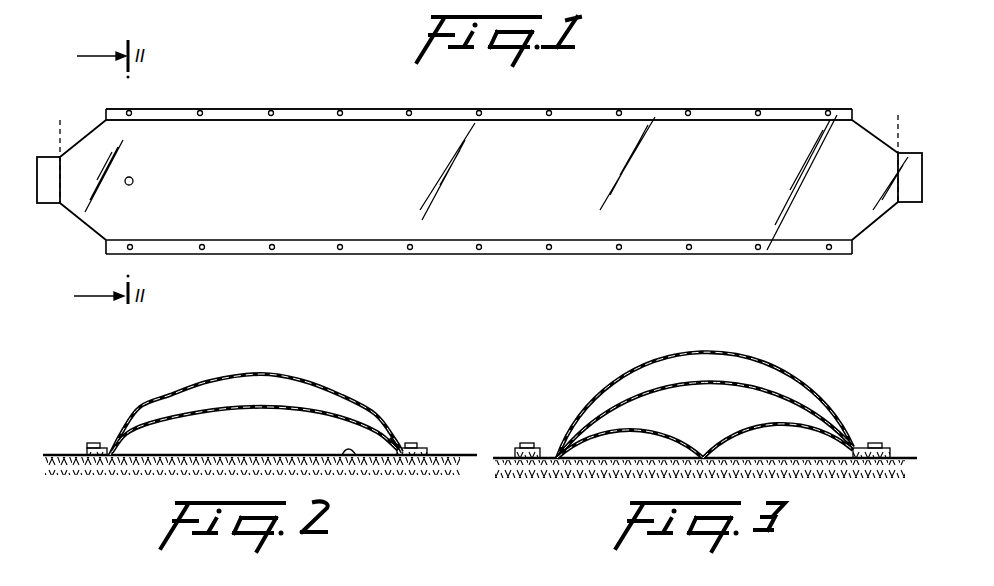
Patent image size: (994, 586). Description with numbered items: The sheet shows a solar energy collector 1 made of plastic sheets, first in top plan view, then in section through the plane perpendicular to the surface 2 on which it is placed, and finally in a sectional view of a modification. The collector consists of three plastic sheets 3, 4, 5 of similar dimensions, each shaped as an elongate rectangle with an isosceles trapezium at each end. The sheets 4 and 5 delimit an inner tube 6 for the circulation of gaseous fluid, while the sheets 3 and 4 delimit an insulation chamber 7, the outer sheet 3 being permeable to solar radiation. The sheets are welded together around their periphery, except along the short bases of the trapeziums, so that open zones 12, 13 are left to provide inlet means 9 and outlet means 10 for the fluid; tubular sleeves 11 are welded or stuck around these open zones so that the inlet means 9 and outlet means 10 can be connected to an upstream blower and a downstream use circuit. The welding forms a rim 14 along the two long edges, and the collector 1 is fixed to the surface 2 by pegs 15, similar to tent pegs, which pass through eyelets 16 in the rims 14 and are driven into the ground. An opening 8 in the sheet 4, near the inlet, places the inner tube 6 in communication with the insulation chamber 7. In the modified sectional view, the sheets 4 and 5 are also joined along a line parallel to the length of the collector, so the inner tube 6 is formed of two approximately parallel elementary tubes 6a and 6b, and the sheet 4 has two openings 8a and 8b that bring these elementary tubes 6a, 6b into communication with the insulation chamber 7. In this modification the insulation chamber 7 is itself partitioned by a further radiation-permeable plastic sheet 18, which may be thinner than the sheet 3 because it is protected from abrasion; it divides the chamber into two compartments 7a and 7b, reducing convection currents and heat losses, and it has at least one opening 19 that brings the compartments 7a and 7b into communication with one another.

In FIG. 1, the solar energy collector 1 is at (370, 104).
In FIG. 2, the solar energy collector 1 is at (400, 407).
In FIG. 3, the solar energy collector 1 is at (852, 413).
In FIG. 2, the surface 2 is at (63, 455).
In FIG. 3, the surface 2 is at (503, 458).
In FIG. 2, the plastic sheet 3 is at (296, 377).
In FIG. 3, the plastic sheet 3 is at (781, 404).
In FIG. 2, the plastic sheet 4 is at (329, 411).
In FIG. 3, the plastic sheet 4 is at (738, 425).
In FIG. 2, the plastic sheet 5 is at (352, 455).
In FIG. 3, the plastic sheet 5 is at (815, 459).
In FIG. 2, the inner tube 6 is at (200, 433).
In FIG. 3, the inner tube 6 is at (548, 558).
In FIG. 3, the elementary tube 6a is at (657, 443).
In FIG. 3, the elementary tube 6b is at (781, 437).
In FIG. 2, the insulation chamber 7 is at (170, 404).
In FIG. 3, the insulation chamber 7 is at (591, 311).
In FIG. 3, the compartment 7a is at (640, 379).
In FIG. 3, the compartment 7b is at (637, 411).
In FIG. 1, the opening 8 is at (134, 178).
In FIG. 2, the opening 8 is at (259, 401).
In FIG. 3, the opening 8a is at (625, 434).
In FIG. 3, the opening 8b is at (791, 430).
In FIG. 1, the inlet means 9 is at (37, 170).
In FIG. 1, the outlet means 10 is at (923, 180).
In FIG. 1, the tubular sleeve 11 is at (48, 192).
In FIG. 1, the open zone 12 is at (60, 149).
In FIG. 1, the open zone 13 is at (897, 148).
In FIG. 1, the rim 14 is at (515, 110).
In FIG. 2, the rim 14 is at (113, 482).
In FIG. 2, the peg 15 is at (112, 452).
In FIG. 3, the peg 15 is at (547, 482).
In FIG. 1, the eyelet 16 is at (272, 111).
In FIG. 3, the plastic sheet 18 is at (739, 392).
In FIG. 3, the opening 19 is at (707, 383).